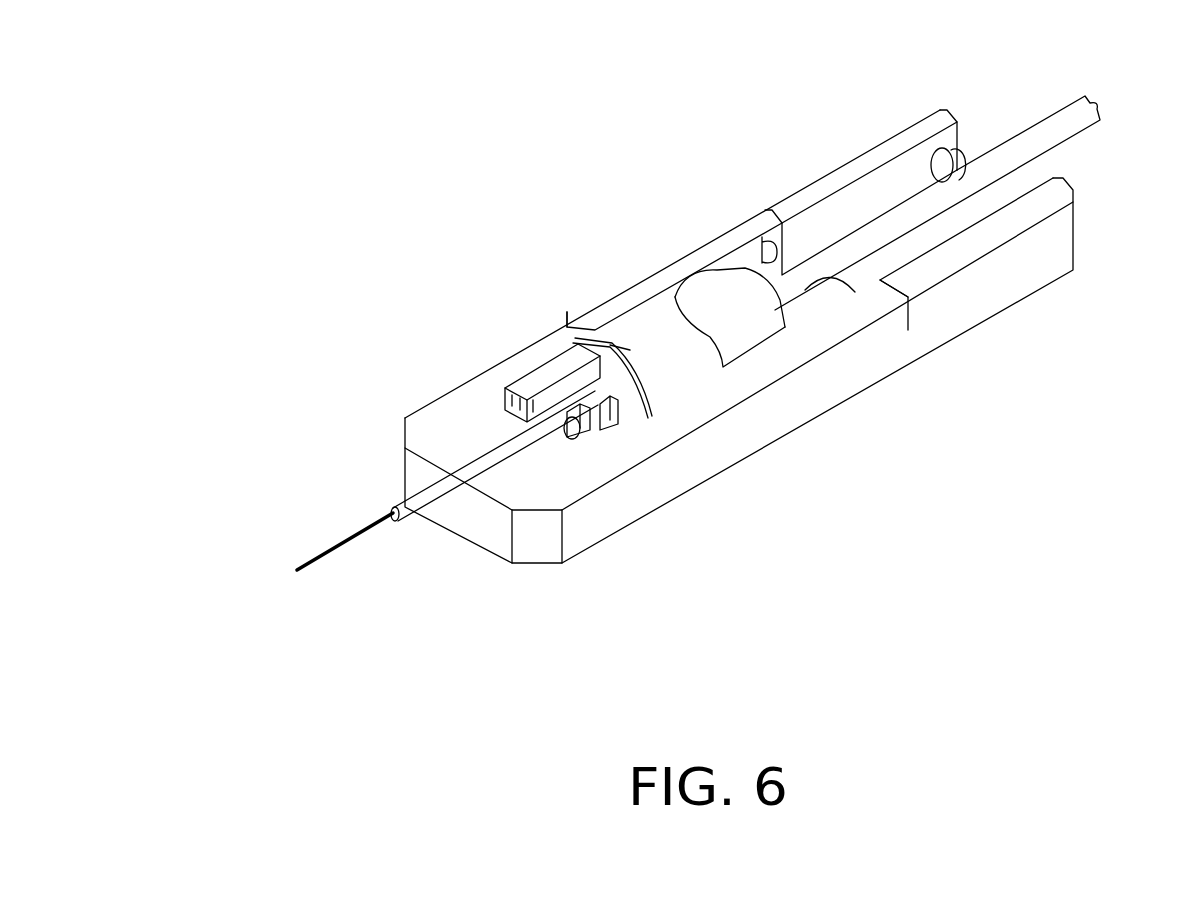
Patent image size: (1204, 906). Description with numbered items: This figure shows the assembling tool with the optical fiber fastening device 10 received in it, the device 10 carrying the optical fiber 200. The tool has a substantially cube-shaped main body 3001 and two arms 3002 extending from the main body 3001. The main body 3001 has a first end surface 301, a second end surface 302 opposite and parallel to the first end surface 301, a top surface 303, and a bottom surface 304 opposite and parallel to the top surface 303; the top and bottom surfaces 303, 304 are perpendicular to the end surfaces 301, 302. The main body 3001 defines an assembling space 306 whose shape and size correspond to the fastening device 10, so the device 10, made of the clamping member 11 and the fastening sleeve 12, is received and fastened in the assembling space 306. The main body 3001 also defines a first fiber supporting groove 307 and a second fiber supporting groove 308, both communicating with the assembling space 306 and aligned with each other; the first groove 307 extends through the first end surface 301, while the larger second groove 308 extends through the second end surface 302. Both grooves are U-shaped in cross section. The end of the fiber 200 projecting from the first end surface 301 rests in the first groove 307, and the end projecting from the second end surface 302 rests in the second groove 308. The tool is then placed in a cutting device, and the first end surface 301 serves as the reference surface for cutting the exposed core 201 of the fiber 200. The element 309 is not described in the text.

The optical fiber fastening device 10 is at (535, 351).
The clamping member 11 is at (533, 388).
The fastening sleeve 12 is at (573, 345).
The optical fiber 200 is at (1057, 135).
The core 201 is at (318, 558).
The first end surface 301 is at (490, 528).
The second end surface 302 is at (856, 283).
The top surface 303 is at (668, 272).
The bottom surface 304 is at (785, 400).
The assembling space 306 is at (710, 270).
The first fiber supporting groove 307 is at (473, 458).
The second fiber supporting groove 308 is at (760, 272).
The protrusion 309 is at (953, 165).
The main body 3001 is at (550, 305).
The arms 3002 is at (880, 160).